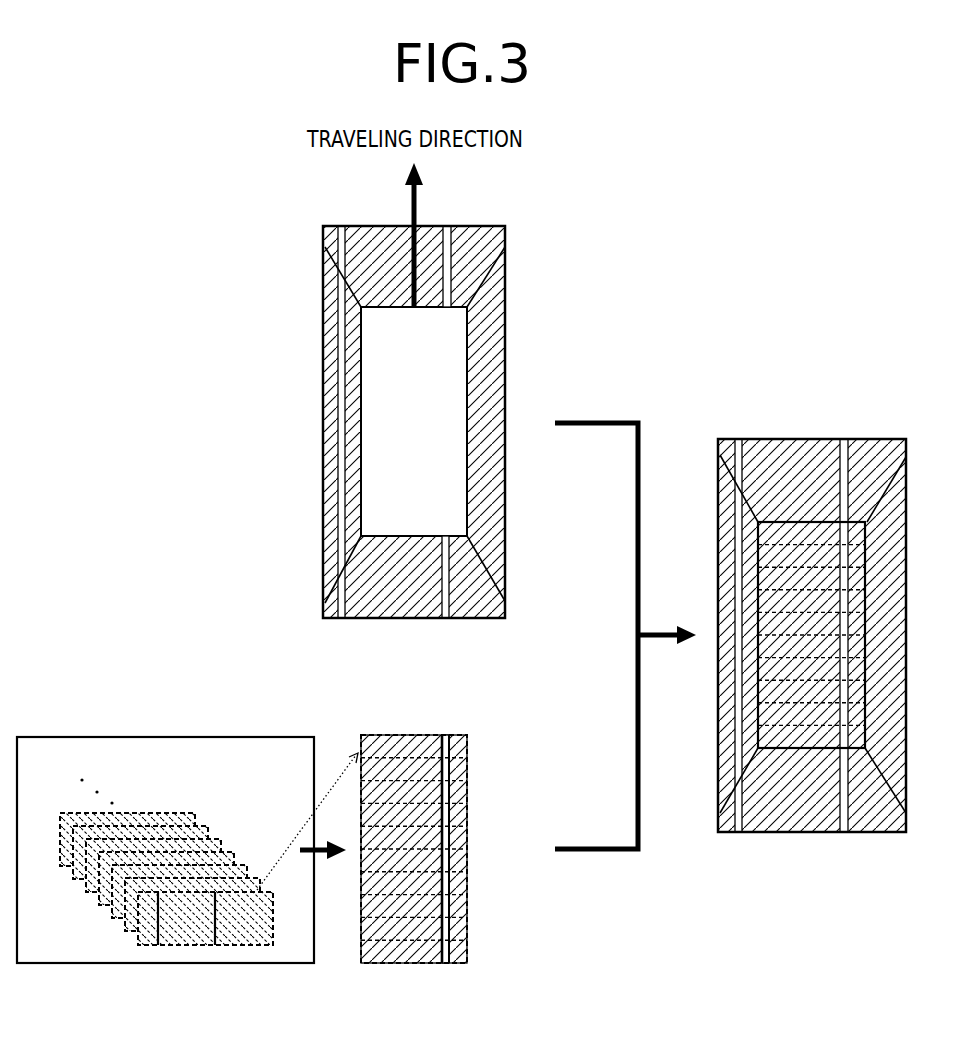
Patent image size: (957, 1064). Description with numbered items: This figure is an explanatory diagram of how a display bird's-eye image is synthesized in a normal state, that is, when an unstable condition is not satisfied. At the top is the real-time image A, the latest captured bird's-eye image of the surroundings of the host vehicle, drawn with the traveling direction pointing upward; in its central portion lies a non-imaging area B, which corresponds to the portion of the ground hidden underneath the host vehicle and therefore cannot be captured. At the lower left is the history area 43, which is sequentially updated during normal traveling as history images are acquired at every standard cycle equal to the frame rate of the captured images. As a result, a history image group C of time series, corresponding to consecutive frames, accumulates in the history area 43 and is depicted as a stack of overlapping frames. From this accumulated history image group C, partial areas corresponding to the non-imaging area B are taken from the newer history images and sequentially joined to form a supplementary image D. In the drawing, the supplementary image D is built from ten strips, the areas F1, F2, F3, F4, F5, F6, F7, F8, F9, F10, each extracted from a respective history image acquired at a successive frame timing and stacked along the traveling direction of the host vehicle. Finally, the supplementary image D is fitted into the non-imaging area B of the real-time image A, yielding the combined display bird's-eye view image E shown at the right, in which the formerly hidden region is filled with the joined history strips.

The real-time image A is at (450, 387).
The non-imaging area B is at (450, 367).
The history image group C is at (142, 945).
The supplementary image D is at (415, 963).
The display bird's-eye view image E is at (765, 439).
The history area 43 is at (68, 737).
The area F1 is at (439, 950).
The area F2 is at (439, 927).
The area F3 is at (439, 905).
The area F4 is at (439, 882).
The area F5 is at (439, 859).
The area F6 is at (439, 836).
The area F7 is at (439, 813).
The area F8 is at (439, 791).
The area F9 is at (439, 768).
The area F10 is at (444, 747).